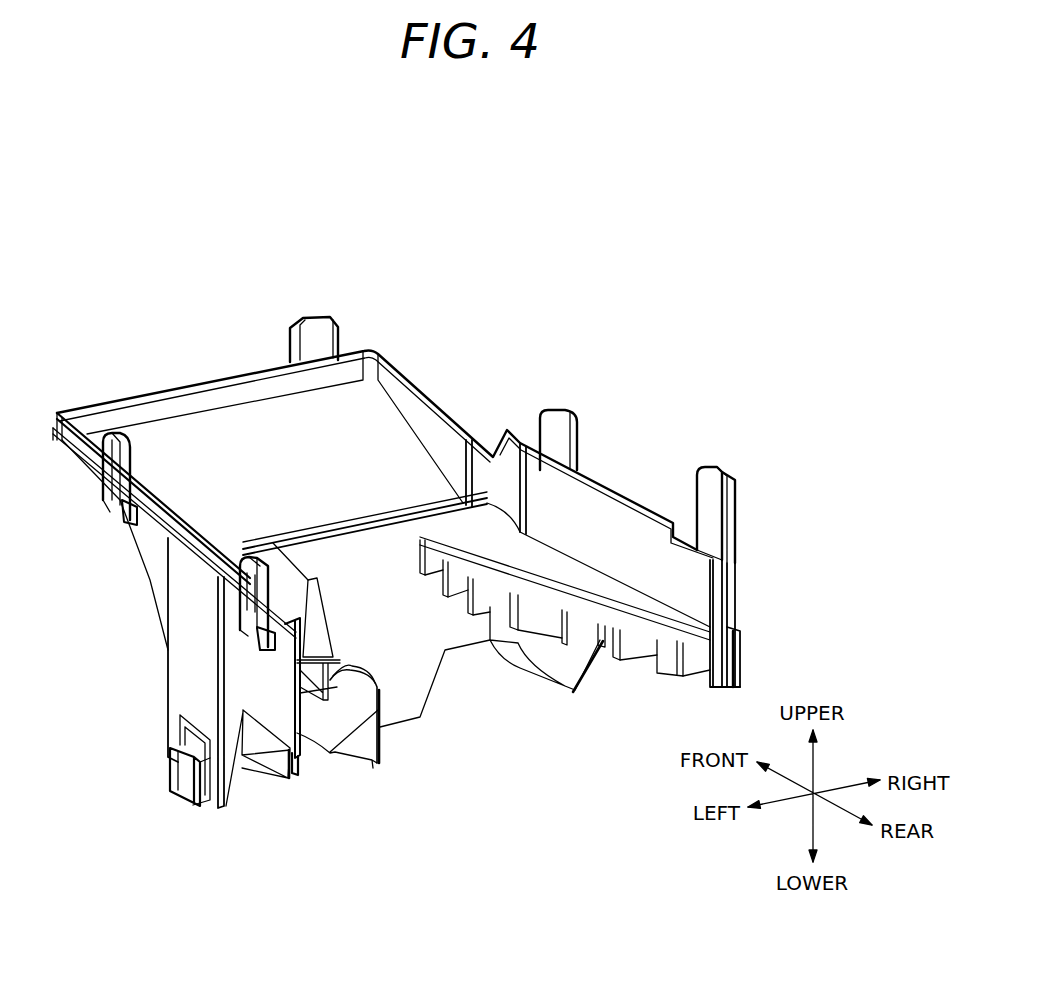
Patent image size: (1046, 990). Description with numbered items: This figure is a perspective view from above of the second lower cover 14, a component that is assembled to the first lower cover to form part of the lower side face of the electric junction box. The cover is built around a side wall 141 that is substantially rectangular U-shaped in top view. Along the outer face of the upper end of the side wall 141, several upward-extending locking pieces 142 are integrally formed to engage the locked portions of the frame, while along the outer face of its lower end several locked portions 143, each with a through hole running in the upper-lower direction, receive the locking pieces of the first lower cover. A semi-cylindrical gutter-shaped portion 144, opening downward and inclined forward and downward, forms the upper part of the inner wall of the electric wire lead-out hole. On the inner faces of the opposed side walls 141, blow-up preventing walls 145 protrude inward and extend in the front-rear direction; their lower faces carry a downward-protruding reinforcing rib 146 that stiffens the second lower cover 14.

The second lower cover 14 is at (760, 306).
The side wall 141 is at (158, 560).
The locking piece 142 is at (325, 335).
The locked portion 143 is at (180, 780).
The gutter-shaped portion 144 is at (333, 735).
The blow-up preventing wall 145 is at (312, 615).
The reinforcing rib 146 is at (632, 655).